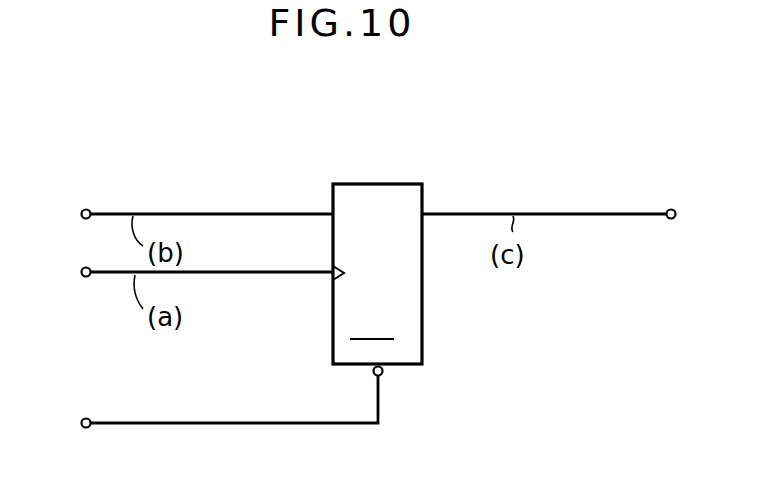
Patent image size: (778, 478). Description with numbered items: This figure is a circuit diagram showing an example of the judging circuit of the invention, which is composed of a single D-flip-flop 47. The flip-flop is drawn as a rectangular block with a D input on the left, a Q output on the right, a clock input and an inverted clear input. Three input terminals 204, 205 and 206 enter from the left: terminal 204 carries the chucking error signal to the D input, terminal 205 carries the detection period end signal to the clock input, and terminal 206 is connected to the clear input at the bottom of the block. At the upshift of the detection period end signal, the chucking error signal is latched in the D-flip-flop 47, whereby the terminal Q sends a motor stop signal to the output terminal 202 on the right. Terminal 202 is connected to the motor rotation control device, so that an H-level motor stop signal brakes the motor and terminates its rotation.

The D-flip-flop 47 is at (376, 183).
The terminal 202 is at (577, 217).
The terminal 204 is at (174, 215).
The terminal 205 is at (174, 274).
The terminal 206 is at (196, 407).